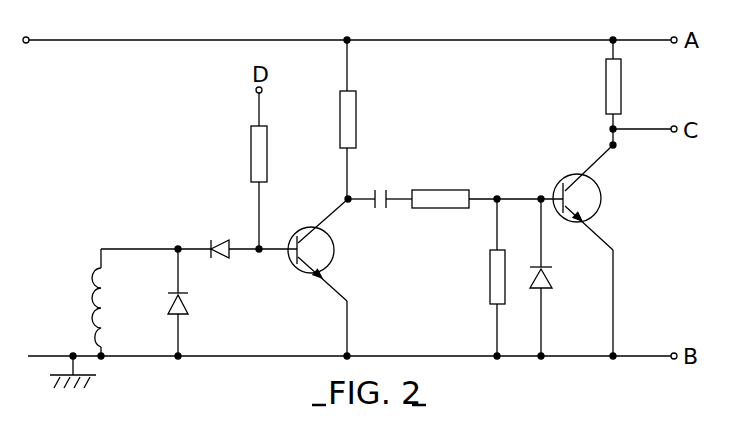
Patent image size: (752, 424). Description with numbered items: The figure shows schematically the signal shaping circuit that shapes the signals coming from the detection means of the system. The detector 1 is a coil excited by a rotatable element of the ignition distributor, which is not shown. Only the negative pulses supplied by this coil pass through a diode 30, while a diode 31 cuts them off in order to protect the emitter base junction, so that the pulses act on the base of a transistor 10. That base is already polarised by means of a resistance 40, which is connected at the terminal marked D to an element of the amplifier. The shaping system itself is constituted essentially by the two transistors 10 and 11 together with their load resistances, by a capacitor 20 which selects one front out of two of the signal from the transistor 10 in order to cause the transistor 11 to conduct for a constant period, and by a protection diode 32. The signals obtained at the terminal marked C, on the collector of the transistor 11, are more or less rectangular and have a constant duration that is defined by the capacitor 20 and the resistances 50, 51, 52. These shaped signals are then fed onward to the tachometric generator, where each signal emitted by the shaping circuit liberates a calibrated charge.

The detector 1 is at (95, 294).
The transistor 10 is at (322, 256).
The transistor 11 is at (590, 200).
The capacitor 20 is at (380, 190).
The diode 30 is at (221, 245).
The diode 31 is at (184, 310).
The protection diode 32 is at (553, 277).
The resistance 40 is at (259, 165).
The resistance 50 is at (351, 130).
The resistance 51 is at (440, 190).
The resistance 52 is at (494, 275).